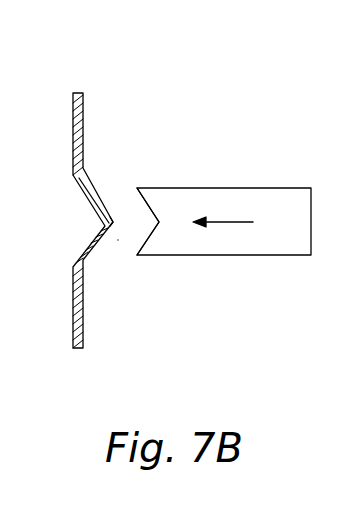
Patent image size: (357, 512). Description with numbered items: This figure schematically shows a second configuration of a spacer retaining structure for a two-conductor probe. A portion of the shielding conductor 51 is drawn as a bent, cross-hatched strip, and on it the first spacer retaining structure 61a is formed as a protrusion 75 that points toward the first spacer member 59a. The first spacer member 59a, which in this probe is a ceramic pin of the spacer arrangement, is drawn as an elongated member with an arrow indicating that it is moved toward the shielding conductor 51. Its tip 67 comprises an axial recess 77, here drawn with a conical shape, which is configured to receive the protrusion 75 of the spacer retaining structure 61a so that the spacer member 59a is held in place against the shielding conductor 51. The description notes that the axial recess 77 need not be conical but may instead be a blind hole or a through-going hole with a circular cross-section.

The shielding conductor 51 is at (77, 133).
The first spacer retaining structure 61a is at (103, 190).
The first spacer member 59a is at (237, 200).
The axial recess 77 is at (160, 222).
The protrusion 75 is at (113, 222).
The tip 67 is at (140, 270).